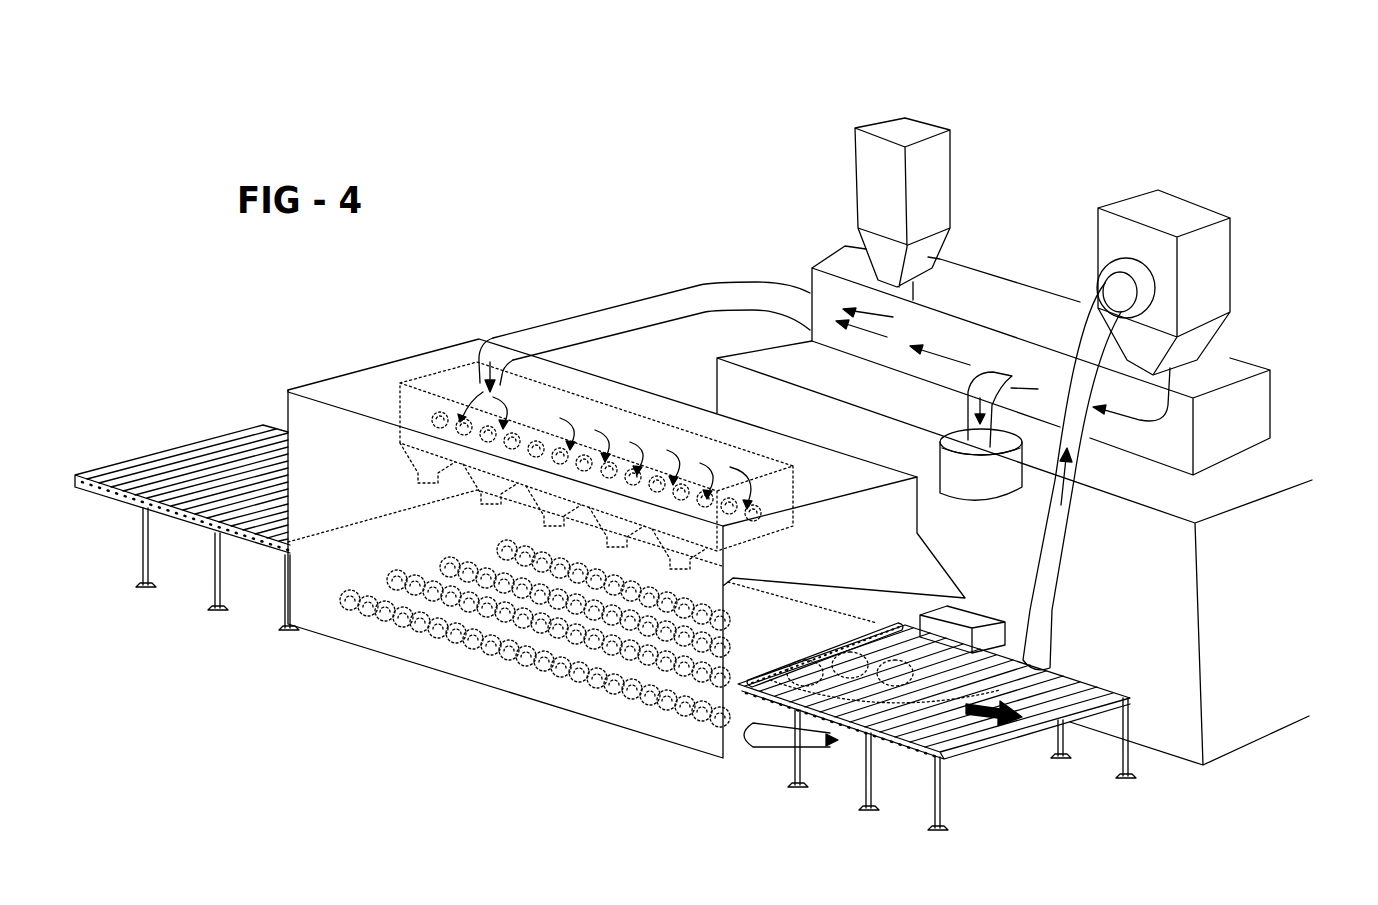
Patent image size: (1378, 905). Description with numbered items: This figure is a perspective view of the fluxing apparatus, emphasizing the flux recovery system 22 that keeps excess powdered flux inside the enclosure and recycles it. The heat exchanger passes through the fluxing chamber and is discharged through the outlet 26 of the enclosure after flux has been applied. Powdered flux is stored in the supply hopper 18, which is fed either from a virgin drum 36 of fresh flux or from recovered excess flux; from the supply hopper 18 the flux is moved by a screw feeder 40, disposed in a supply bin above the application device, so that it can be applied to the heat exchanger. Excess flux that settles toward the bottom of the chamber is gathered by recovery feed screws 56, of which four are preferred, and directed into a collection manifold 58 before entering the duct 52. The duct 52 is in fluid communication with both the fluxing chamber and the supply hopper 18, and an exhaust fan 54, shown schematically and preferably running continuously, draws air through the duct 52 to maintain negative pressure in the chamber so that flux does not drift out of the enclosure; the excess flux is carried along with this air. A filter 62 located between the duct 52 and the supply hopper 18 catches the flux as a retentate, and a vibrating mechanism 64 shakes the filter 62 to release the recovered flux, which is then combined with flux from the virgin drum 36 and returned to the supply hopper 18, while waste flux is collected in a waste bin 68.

The flux recovery system 22 is at (1112, 137).
The supply hopper 18 is at (620, 316).
The screw feeder 40 is at (447, 408).
The virgin drum 36 is at (890, 117).
The exhaust fan 54 is at (1105, 270).
The filter 62 is at (1237, 264).
The vibrating mechanism 64 is at (1212, 350).
The duct 52 is at (1058, 532).
The waste bin 68 is at (978, 492).
The collection manifold 58 is at (975, 622).
The recovery feed screw 56 is at (355, 605).
The outlet 26 is at (738, 690).